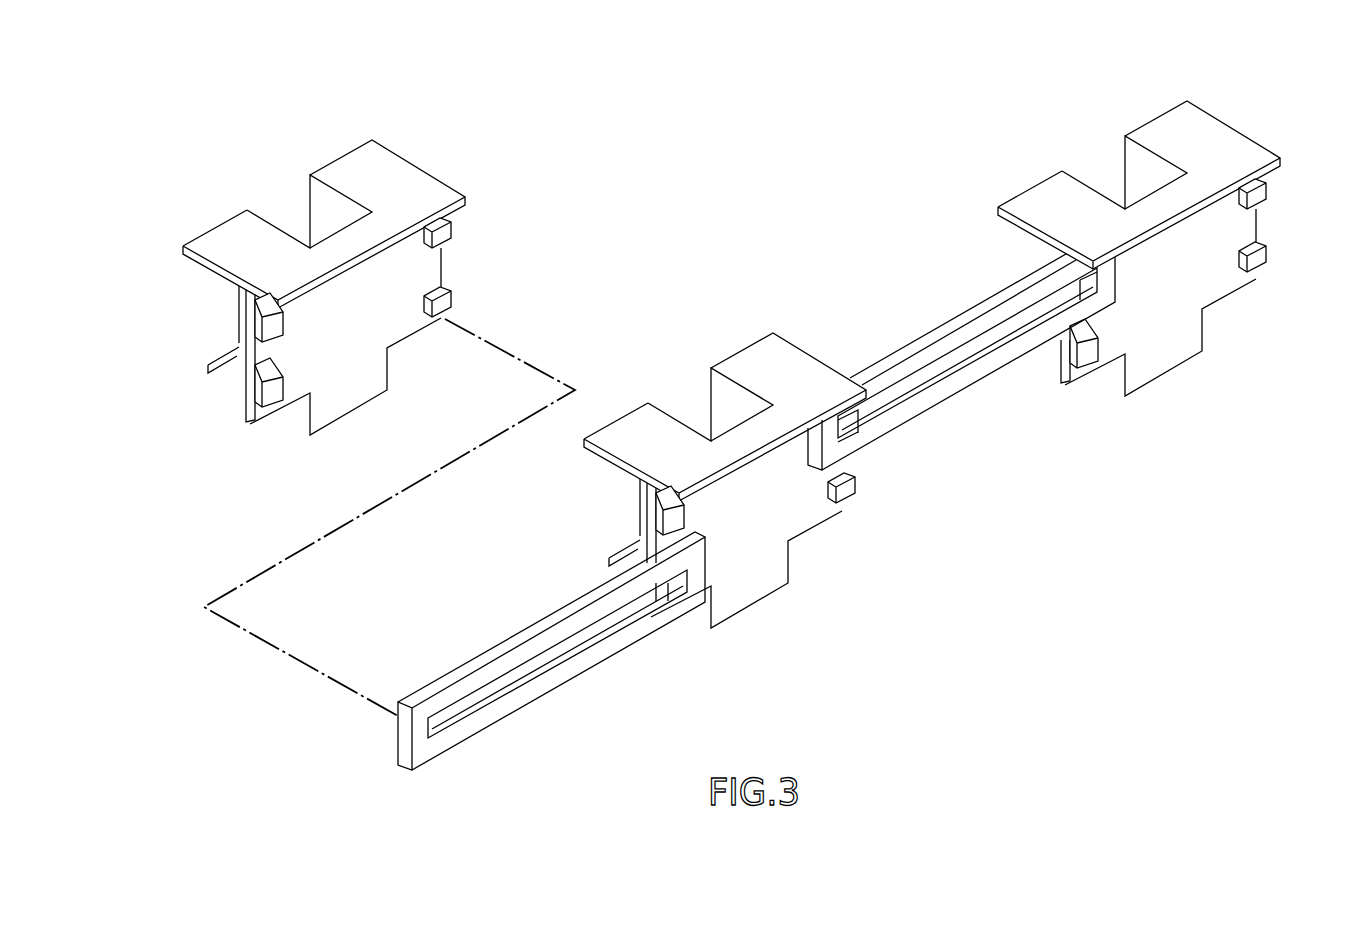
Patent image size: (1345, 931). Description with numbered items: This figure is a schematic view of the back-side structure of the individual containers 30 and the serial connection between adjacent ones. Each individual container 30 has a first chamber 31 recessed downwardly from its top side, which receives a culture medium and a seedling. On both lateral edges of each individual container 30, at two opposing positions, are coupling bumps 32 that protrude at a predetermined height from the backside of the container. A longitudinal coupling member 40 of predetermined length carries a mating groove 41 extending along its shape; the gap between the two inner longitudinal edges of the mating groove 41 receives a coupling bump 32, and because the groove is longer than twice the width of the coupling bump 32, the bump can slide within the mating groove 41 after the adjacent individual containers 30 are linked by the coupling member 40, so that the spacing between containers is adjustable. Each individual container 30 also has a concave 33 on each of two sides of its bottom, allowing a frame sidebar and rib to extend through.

The individual container 30 is at (432, 165).
The first chamber 31 is at (298, 222).
The coupling bump 32 is at (441, 283).
The concave 33 is at (301, 411).
The coupling member 40 is at (517, 637).
The mating groove 41 is at (510, 677).